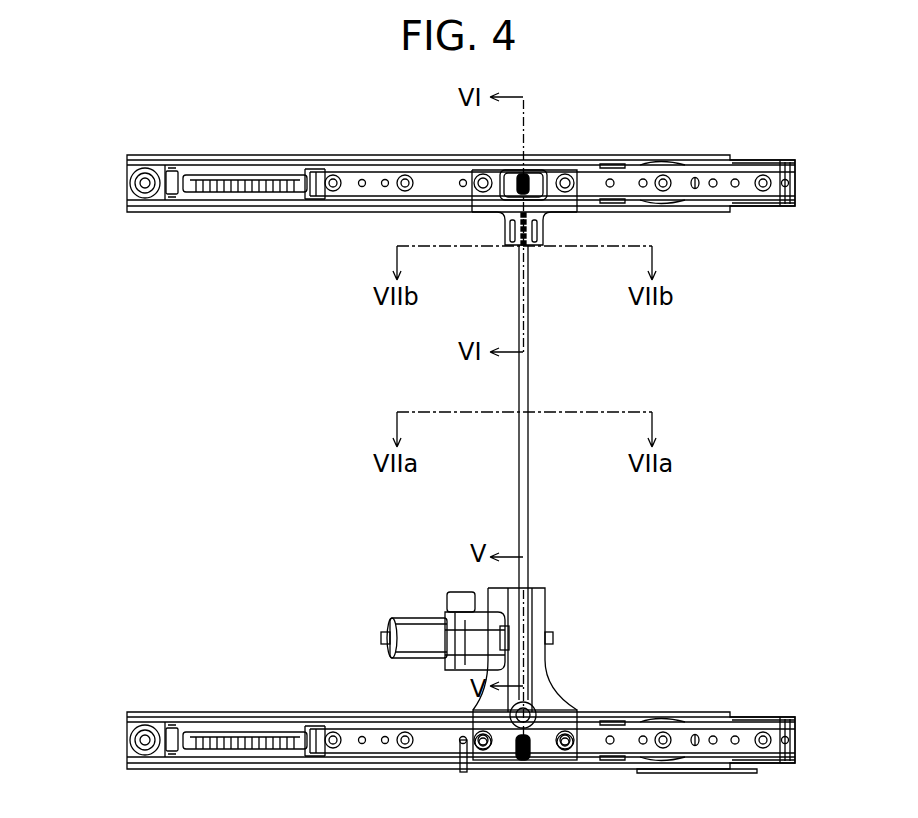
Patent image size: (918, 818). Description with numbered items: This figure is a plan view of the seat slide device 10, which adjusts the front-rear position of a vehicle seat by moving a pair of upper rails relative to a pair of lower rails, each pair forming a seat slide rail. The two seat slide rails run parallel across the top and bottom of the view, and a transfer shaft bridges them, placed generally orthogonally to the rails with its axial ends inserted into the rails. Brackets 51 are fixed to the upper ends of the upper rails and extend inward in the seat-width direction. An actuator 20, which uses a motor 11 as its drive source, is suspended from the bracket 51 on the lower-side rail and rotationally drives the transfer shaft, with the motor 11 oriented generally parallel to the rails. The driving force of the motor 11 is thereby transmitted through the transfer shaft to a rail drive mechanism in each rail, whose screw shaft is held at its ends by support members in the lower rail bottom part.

The seat slide device 10 is at (134, 119).
The bracket 51 is at (472, 226).
The actuator 20 is at (362, 617).
The motor 11 is at (395, 618).